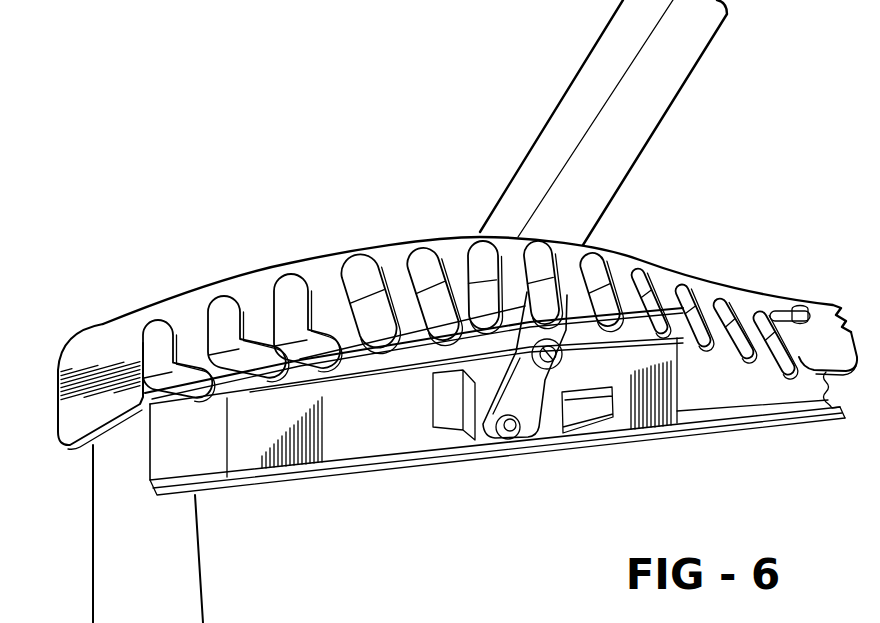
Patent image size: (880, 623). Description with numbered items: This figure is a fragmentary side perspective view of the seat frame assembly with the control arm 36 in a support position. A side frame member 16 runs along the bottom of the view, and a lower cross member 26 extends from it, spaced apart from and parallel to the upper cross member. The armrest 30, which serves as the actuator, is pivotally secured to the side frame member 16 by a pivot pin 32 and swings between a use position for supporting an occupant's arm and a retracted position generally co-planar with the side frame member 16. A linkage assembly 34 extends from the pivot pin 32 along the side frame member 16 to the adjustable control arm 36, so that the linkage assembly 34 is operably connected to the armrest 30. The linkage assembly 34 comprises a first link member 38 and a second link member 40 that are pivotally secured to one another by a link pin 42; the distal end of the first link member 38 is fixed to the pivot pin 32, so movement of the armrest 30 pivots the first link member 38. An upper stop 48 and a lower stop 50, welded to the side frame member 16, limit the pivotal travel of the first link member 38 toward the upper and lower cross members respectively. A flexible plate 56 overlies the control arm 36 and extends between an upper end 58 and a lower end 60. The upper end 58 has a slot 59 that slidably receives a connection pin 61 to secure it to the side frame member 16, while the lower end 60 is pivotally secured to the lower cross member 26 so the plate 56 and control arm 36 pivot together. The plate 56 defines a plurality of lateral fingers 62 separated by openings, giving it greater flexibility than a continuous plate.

The side frame member 16 is at (322, 480).
The lower cross member 26 is at (188, 527).
The armrest 30 is at (540, 133).
The pivot pin 32 is at (507, 420).
The linkage assembly 34 is at (568, 367).
The control arm 36 is at (363, 308).
The first link member 38 is at (488, 432).
The second link member 40 is at (555, 312).
The link pin 42 is at (518, 352).
The upper stop 48 is at (588, 427).
The lower stop 50 is at (448, 414).
The plate 56 is at (297, 258).
The upper end 58 is at (836, 323).
The slot 59 is at (777, 309).
The lower end 60 is at (72, 340).
The connection pin 61 is at (798, 306).
The lateral fingers 62 is at (333, 358).